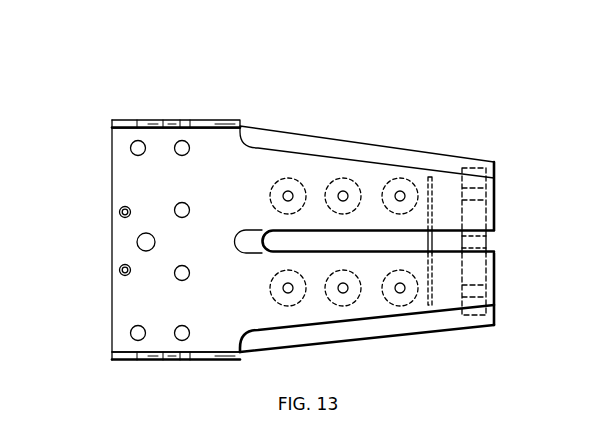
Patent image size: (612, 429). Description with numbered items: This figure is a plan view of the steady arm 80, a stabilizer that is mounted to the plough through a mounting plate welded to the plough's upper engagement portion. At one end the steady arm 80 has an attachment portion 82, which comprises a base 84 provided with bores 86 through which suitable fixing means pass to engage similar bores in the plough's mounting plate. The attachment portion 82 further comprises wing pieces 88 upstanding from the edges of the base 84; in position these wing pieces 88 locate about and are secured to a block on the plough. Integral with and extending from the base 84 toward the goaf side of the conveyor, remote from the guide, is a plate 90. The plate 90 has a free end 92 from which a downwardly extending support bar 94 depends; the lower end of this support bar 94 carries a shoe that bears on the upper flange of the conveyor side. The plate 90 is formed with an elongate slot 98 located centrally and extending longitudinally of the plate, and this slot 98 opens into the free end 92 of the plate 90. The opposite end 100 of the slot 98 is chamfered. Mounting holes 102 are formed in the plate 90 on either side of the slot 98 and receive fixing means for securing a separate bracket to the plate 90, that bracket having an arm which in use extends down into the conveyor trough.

The steady arm 80 is at (306, 127).
The attachment portion 82 is at (103, 141).
The base 84 is at (157, 152).
The bores 86 is at (178, 155).
The wing pieces 88 is at (218, 120).
The plate 90 is at (320, 180).
The free end 92 is at (496, 198).
The support bar 94 is at (478, 243).
The elongate slot 98 is at (357, 230).
The end of the slot 100 is at (247, 245).
The mounting holes 102 is at (288, 197).